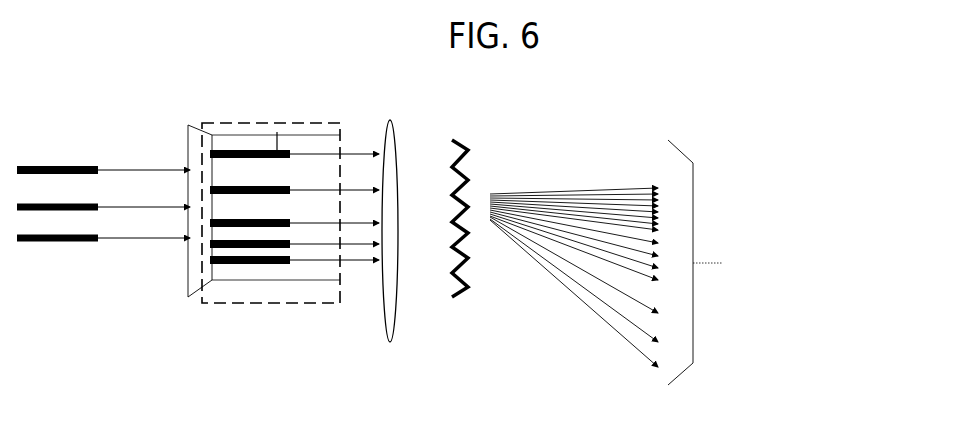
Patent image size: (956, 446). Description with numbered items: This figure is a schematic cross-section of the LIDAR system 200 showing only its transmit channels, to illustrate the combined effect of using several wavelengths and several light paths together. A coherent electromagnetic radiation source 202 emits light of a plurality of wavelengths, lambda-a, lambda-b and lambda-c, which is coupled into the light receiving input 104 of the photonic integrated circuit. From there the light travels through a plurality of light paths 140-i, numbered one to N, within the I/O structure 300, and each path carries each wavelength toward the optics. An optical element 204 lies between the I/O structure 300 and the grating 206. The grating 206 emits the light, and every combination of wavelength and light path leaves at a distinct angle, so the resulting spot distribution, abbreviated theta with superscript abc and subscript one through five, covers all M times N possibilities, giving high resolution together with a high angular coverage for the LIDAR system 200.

The coherent electromagnetic radiation source 202 is at (103, 171).
The light receiving input 104 is at (260, 242).
The light path 140-i is at (294, 178).
The I/O structure 300 is at (314, 303).
The lens 204 is at (395, 210).
The grating 206 is at (463, 187).
The LIDAR system 200 is at (703, 145).